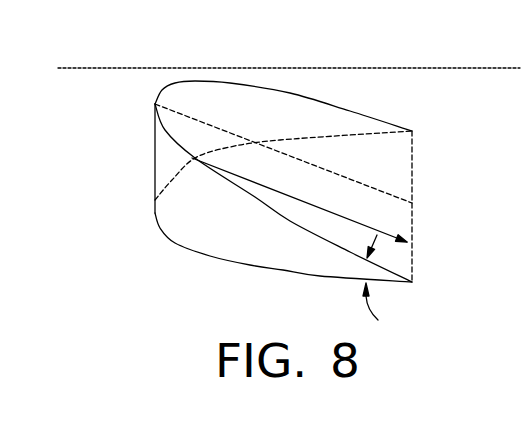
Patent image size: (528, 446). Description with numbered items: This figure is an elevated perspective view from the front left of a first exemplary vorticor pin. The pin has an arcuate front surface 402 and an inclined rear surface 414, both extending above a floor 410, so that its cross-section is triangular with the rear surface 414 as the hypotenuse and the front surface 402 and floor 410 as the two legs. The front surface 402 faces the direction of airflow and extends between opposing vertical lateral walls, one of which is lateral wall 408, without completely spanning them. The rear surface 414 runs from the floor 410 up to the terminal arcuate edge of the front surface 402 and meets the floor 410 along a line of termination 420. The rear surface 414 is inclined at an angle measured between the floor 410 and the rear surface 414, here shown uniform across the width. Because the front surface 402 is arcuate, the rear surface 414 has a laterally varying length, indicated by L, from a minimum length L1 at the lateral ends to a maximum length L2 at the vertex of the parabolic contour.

The lateral wall 408 is at (289, 37).
The floor 410 is at (94, 197).
The rear surface 414 is at (293, 110).
The front surface 402 is at (243, 240).
The line of termination 420 is at (410, 195).
The axis length L is at (355, 220).
The minimum length of the rear surface L1 is at (306, 233).
The maximum length of the rear surface L2 is at (355, 182).